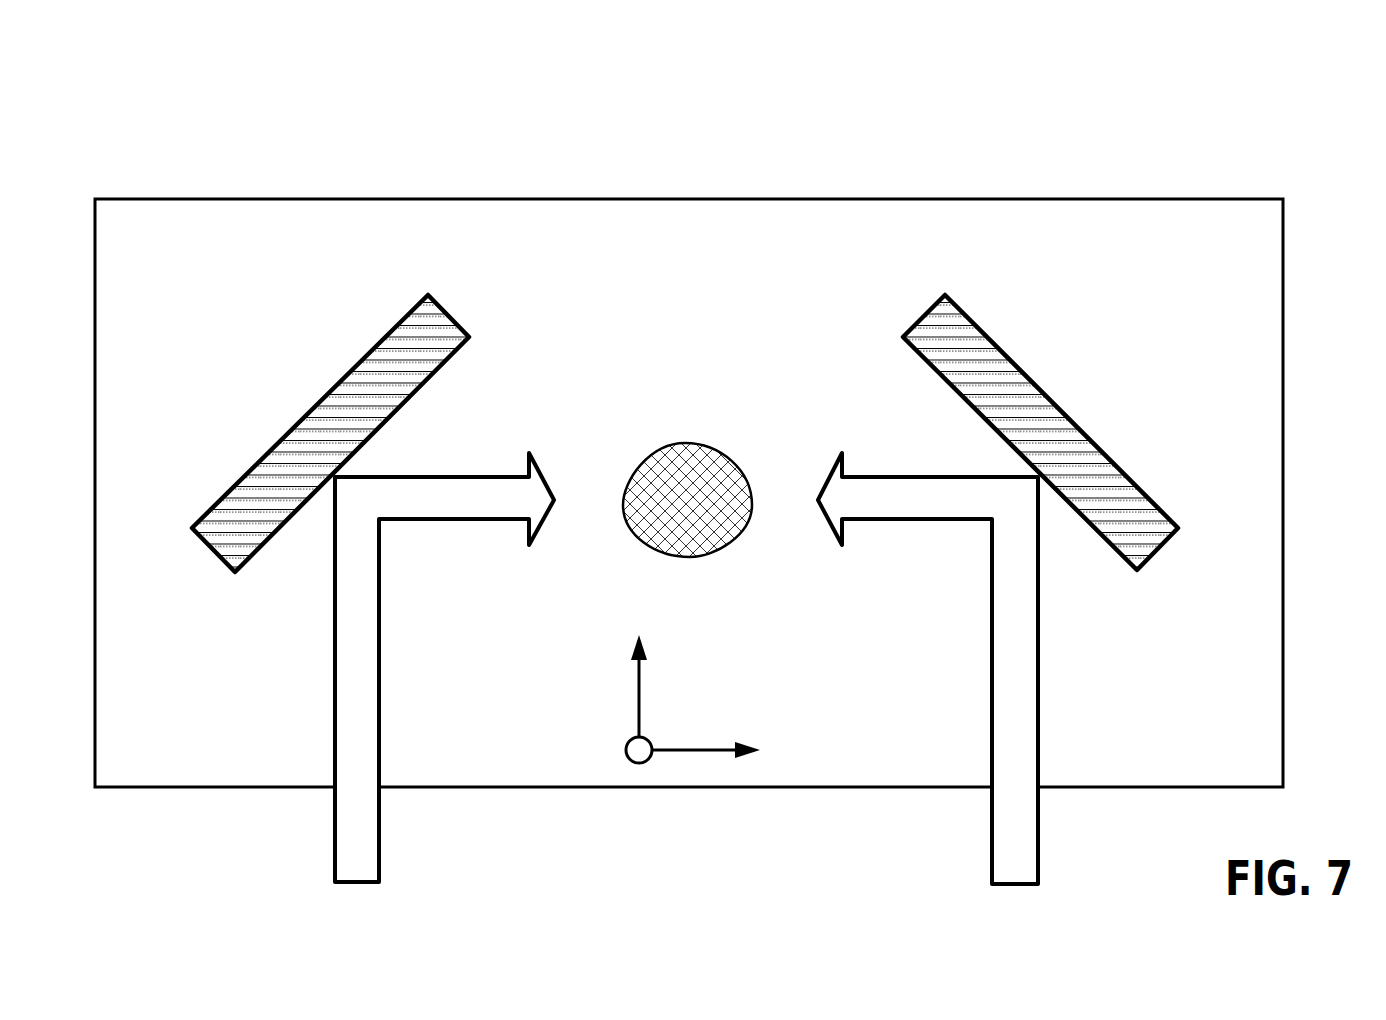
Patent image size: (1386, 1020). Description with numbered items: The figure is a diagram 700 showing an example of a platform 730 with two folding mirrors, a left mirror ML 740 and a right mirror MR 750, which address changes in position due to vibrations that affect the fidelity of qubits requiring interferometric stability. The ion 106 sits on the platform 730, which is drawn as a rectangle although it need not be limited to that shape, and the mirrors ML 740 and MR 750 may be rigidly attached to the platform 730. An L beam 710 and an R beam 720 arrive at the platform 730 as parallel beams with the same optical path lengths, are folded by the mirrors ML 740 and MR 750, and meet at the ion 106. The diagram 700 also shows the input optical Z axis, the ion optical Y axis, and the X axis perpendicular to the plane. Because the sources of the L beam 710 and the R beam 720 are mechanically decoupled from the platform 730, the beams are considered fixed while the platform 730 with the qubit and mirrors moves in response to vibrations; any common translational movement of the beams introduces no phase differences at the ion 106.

The diagram 700 is at (216, 100).
The platform 730 is at (895, 198).
The left mirror ML 740 is at (295, 425).
The right mirror MR 750 is at (1077, 420).
The ion 106 is at (736, 428).
The L beam 710 is at (380, 635).
The R beam 720 is at (992, 637).